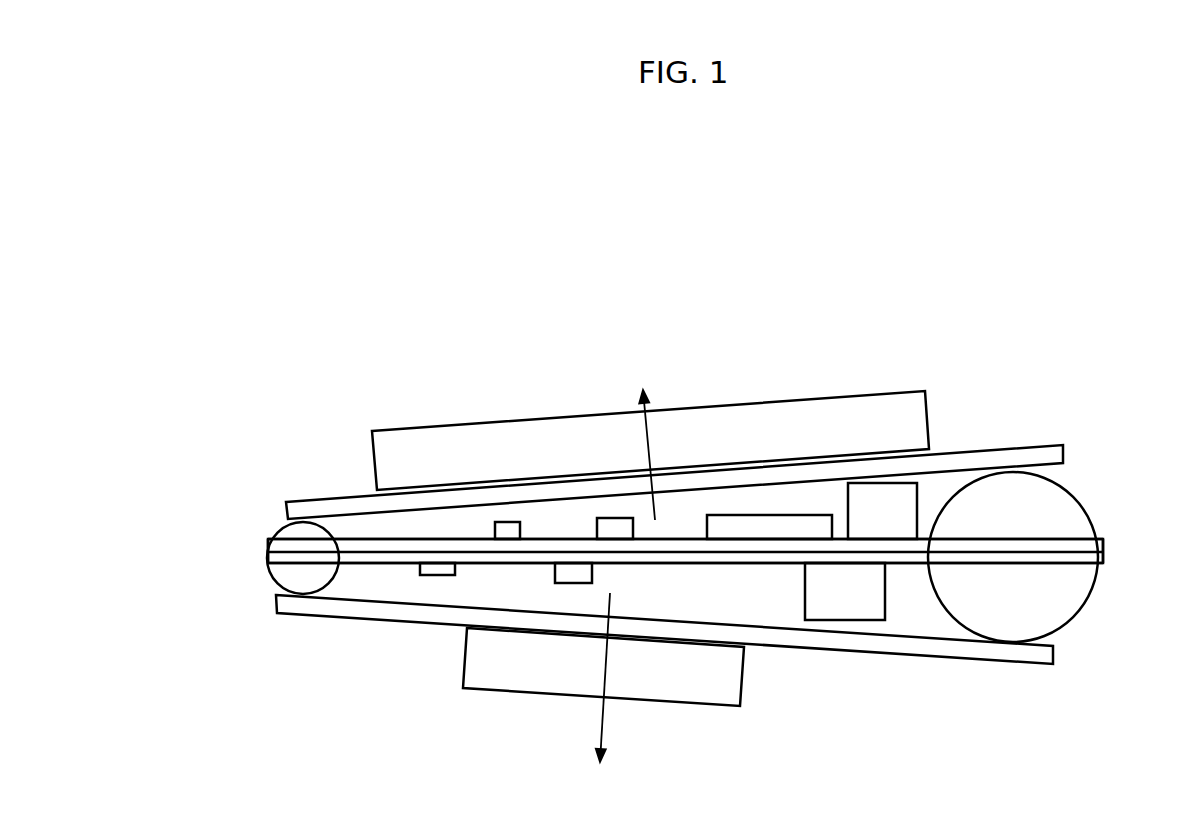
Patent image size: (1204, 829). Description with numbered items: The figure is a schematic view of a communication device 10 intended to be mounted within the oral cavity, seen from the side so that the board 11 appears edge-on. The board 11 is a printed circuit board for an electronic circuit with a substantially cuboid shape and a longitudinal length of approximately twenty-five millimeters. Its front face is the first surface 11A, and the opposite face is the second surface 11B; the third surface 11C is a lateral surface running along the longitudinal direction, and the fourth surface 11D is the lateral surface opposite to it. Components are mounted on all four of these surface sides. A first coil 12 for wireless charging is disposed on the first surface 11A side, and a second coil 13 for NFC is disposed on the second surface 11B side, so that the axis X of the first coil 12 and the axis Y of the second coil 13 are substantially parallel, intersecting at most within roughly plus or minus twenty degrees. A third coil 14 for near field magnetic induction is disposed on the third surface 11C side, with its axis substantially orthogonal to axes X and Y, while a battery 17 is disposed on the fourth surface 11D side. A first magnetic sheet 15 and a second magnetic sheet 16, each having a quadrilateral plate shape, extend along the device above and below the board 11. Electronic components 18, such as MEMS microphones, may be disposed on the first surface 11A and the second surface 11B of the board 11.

The communication device 10 is at (250, 285).
The board 11 is at (675, 555).
The first surface 11A is at (430, 535).
The second surface 11B is at (380, 567).
The third surface 11C is at (266, 548).
The fourth surface 11D is at (1108, 545).
The first coil 12 is at (838, 430).
The second coil 13 is at (507, 660).
The third coil 14 is at (298, 582).
The first magnetic sheet 15 is at (1063, 452).
The second magnetic sheet 16 is at (1053, 652).
The battery 17 is at (1033, 597).
The electronic components 18 is at (838, 592).